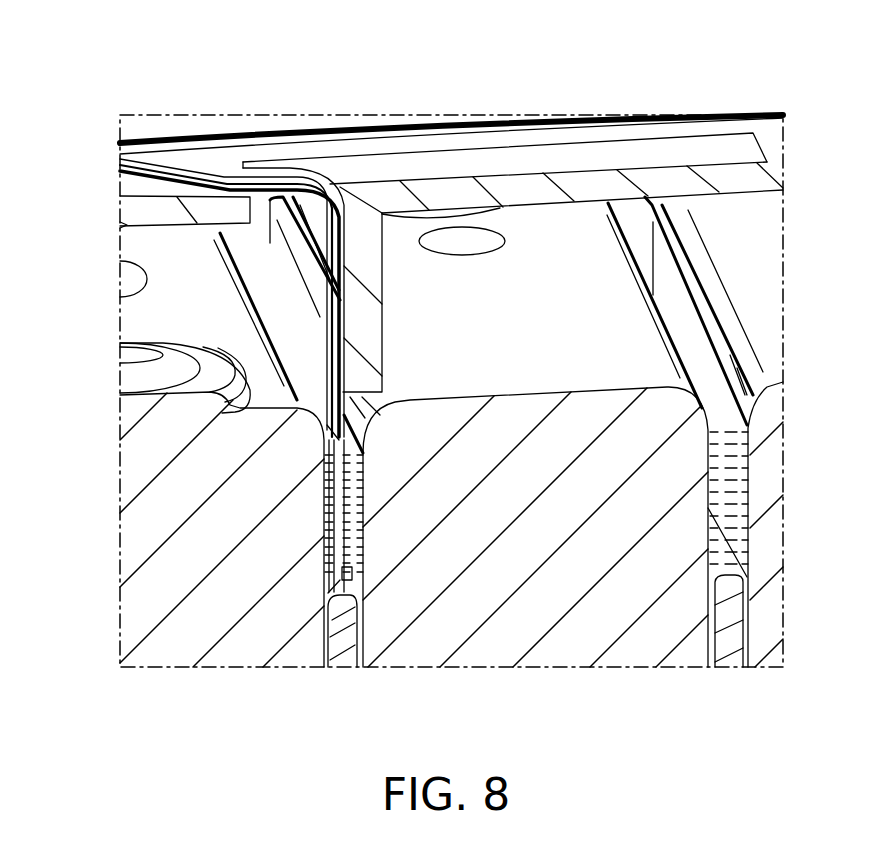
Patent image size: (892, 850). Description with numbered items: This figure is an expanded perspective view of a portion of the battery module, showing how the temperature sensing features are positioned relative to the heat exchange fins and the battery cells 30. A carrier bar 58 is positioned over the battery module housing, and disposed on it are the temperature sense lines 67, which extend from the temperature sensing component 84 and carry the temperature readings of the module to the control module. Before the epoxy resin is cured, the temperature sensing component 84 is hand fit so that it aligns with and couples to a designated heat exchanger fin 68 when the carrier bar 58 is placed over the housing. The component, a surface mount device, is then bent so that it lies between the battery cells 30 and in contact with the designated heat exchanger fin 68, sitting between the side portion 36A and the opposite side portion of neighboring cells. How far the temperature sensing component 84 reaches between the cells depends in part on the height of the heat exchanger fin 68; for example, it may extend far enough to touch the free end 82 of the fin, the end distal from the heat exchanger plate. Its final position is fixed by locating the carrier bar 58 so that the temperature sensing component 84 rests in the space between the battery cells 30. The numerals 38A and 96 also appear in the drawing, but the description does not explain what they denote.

The free end 82 is at (278, 98).
The temperature sense lines 67 is at (190, 167).
The carrier bar 58 is at (420, 167).
The boss 38A is at (145, 323).
The nozzle body 96 is at (390, 403).
The side portion 36A is at (355, 522).
The temperature sensing component 84 is at (350, 553).
The battery cells 30 is at (147, 525).
The heat exchanger fin 68 is at (347, 653).